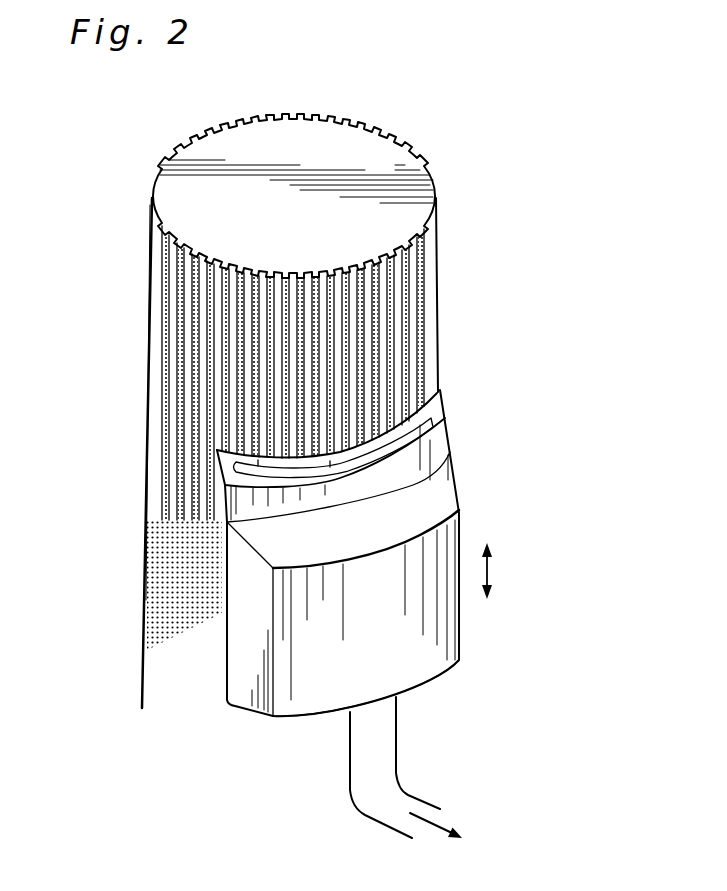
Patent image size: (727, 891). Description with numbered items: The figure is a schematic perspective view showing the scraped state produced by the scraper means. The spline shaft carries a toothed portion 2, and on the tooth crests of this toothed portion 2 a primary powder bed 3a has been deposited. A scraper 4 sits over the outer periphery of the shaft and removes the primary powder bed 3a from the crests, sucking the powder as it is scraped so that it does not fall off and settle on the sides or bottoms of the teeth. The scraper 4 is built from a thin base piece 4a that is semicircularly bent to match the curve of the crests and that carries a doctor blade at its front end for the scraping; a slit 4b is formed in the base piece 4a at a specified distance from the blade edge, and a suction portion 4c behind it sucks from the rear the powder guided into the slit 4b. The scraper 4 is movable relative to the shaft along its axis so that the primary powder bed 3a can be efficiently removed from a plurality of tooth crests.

The toothed portion 2 is at (289, 411).
The primary powder bed 3a is at (172, 302).
The scraper 4 is at (391, 549).
The base piece 4a is at (380, 451).
The slit 4b is at (408, 496).
The suction portion 4c is at (430, 648).